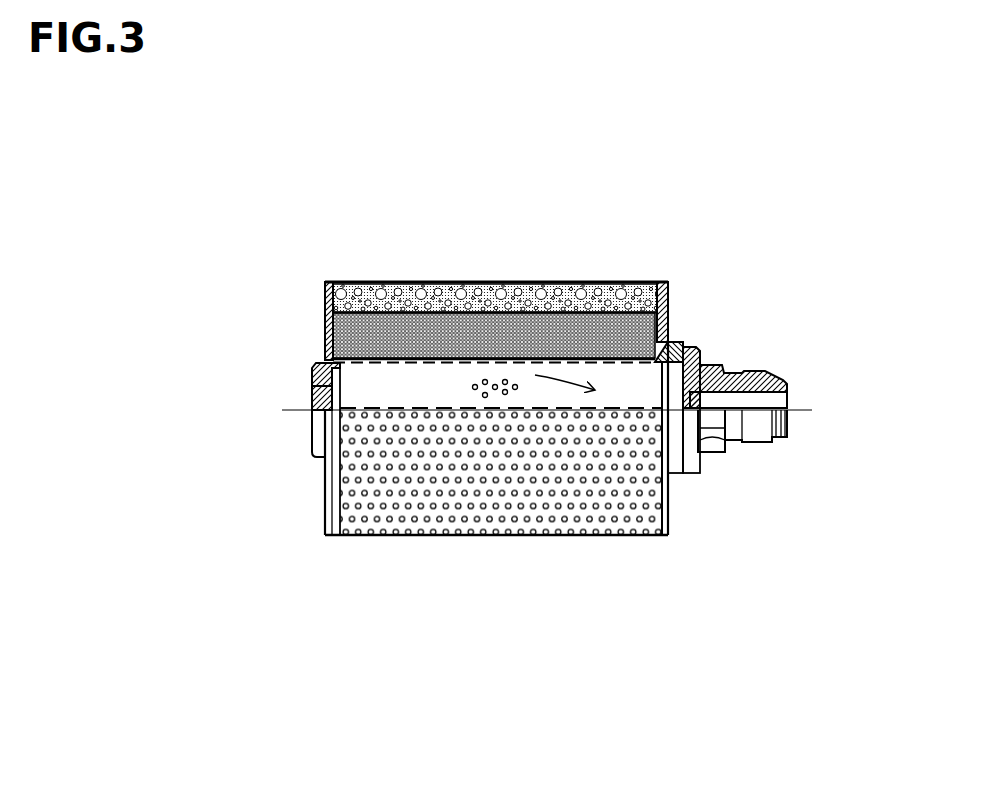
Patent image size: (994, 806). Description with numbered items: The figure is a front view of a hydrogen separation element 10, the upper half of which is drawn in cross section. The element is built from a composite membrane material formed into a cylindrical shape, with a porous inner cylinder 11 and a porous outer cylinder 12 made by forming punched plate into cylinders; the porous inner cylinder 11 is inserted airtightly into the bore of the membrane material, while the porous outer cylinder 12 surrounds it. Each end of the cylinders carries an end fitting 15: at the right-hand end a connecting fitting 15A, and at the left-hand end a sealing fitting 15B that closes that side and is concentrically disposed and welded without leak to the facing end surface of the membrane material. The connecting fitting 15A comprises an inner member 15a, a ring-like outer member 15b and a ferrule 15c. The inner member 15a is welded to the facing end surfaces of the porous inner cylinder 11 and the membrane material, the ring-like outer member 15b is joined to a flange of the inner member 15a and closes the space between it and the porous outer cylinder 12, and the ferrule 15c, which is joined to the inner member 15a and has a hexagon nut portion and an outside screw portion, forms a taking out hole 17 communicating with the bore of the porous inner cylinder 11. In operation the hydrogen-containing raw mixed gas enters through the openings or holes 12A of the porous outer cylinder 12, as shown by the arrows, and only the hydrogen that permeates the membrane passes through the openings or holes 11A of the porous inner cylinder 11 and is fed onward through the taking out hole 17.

The hydrogen separation element 10 is at (545, 263).
The porous inner cylinder 11 is at (312, 372).
The openings or holes of the porous inner cylinder 11A is at (312, 397).
The porous outer cylinder 12 is at (348, 283).
The openings or holes of the porous outer cylinder 12A is at (382, 282).
The end fitting 15 is at (700, 348).
The connecting fitting 15A is at (773, 202).
The sealing fitting 15B is at (312, 438).
The inner member 15a is at (672, 345).
The ring-like outer member 15b is at (668, 295).
The ferrule 15c is at (693, 347).
The taking out hole 17 is at (747, 398).